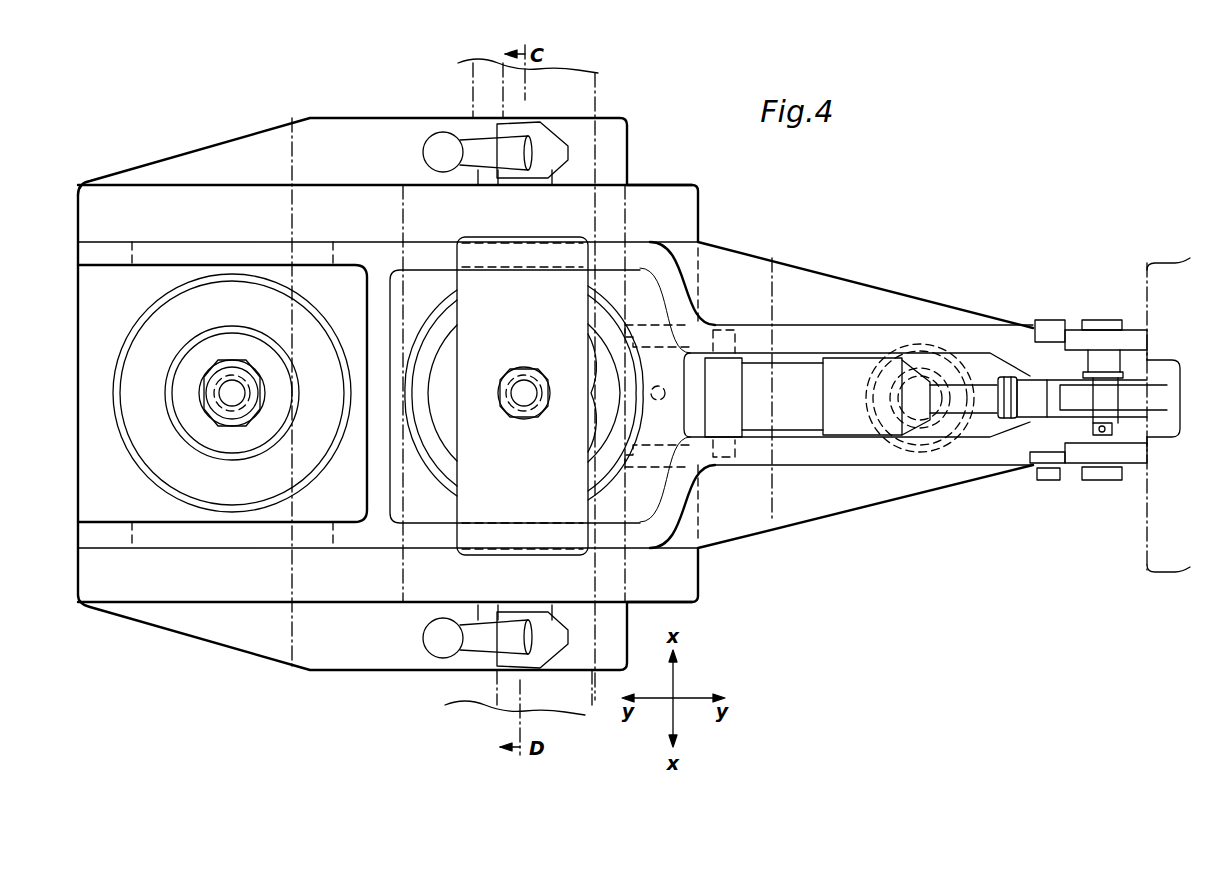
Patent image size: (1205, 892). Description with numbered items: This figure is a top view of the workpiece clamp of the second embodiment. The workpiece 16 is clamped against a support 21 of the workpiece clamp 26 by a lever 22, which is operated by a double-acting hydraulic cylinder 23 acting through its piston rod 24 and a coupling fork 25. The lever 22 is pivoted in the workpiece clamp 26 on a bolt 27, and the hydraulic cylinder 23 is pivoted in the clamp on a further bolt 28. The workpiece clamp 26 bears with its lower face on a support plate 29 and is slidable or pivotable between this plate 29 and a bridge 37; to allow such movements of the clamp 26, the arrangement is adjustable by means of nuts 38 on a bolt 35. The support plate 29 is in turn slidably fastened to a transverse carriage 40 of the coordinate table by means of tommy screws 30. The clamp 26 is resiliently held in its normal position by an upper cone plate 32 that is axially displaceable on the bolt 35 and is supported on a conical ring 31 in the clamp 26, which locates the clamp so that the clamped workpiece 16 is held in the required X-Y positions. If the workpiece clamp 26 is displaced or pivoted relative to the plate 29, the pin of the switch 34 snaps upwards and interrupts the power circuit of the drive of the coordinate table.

The workpiece 16 is at (1143, 415).
The support 21 is at (1163, 367).
The lever 22 is at (1153, 413).
The double-acting hydraulic cylinder 23 is at (848, 377).
The piston rod 24 is at (977, 397).
The coupling fork 25 is at (1050, 390).
The workpiece clamp 26 is at (798, 340).
The bolt 27 is at (732, 328).
The bolt 28 is at (1102, 477).
The support plate 29 is at (683, 577).
The tommy screws 30 is at (477, 638).
The conical ring 31 is at (158, 318).
The upper cone plate 32 is at (217, 317).
The switch 34 is at (658, 390).
The bolt 35 is at (238, 395).
The bridge 37 is at (490, 512).
The nuts 38 is at (513, 377).
The transverse carriage 40 is at (580, 692).